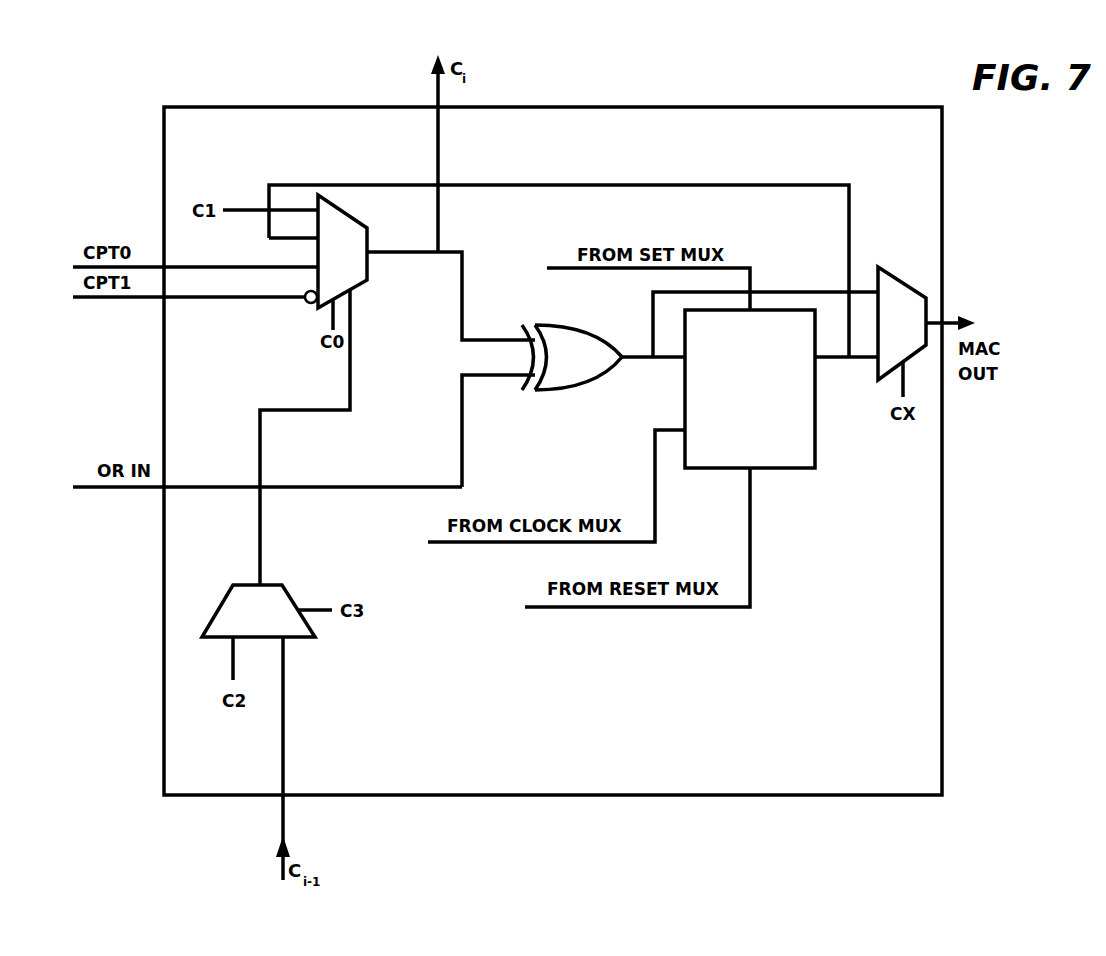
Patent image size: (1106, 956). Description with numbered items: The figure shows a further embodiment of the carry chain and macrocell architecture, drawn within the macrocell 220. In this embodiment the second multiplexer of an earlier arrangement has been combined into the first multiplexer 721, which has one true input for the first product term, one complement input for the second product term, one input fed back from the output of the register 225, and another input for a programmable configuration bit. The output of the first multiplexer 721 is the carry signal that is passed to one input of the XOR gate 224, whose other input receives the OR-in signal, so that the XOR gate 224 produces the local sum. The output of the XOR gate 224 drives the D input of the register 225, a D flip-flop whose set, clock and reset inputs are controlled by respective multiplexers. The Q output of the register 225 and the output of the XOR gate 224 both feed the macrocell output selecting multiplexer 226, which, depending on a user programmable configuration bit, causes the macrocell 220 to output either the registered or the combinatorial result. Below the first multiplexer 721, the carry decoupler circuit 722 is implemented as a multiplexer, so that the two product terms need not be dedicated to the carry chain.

The macrocell 220 is at (545, 106).
The MUX1 721 is at (368, 267).
The XOR gate G2 224 is at (563, 326).
The register 225 is at (817, 428).
The macrocell output selecting multiplexer 226 is at (905, 283).
The carry decoupler circuit 722 is at (218, 606).